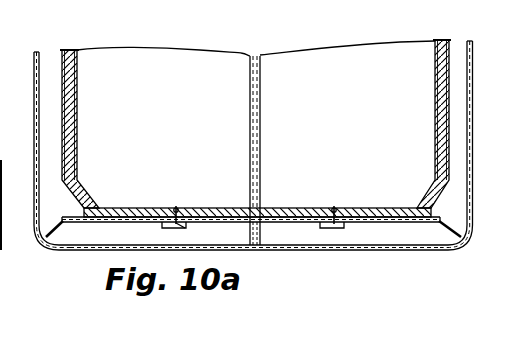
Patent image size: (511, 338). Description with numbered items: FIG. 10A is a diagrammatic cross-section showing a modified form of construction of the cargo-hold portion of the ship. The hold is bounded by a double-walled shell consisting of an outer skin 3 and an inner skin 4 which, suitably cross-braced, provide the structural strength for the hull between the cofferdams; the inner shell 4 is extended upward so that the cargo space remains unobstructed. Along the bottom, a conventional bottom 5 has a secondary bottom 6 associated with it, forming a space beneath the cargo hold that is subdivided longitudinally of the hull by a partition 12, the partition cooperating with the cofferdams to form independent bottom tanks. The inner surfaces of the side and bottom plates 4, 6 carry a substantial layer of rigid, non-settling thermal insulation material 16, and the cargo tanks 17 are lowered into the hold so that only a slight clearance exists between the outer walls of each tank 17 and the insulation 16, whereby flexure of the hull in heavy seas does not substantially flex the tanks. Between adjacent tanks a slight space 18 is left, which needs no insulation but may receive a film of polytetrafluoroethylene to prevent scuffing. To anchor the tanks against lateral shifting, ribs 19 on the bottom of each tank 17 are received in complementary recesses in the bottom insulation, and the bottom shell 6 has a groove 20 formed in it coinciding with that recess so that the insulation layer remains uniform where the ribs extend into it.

The outer skin 3 is at (36, 98).
The inner skin 4 is at (62, 57).
The bottom 5 is at (428, 247).
The secondary bottom 6 is at (121, 222).
The partition 12 is at (261, 231).
The thermal insulation material 16 is at (72, 60).
The tank 17 is at (80, 100).
The space 18 is at (262, 86).
The rib 19 is at (177, 208).
The groove 20 is at (186, 228).